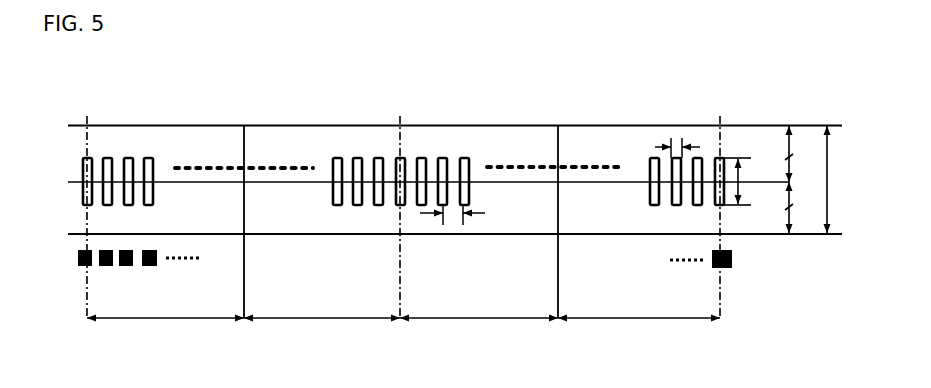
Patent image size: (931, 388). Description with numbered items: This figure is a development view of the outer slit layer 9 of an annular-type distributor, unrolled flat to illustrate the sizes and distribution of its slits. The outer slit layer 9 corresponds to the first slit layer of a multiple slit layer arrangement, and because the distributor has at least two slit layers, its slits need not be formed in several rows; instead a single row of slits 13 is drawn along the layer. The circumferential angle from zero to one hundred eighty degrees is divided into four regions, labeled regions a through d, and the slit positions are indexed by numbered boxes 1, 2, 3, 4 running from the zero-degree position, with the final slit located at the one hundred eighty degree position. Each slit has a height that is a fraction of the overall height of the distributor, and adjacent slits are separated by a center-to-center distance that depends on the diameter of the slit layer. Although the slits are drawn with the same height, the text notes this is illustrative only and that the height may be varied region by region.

The outer slit layer 9 is at (503, 125).
The electrodes 13 is at (128, 157).
The first electrode position 1 is at (85, 258).
The second electrode position 2 is at (106, 258).
The third electrode position 3 is at (126, 258).
The fourth electrode position 4 is at (149, 258).